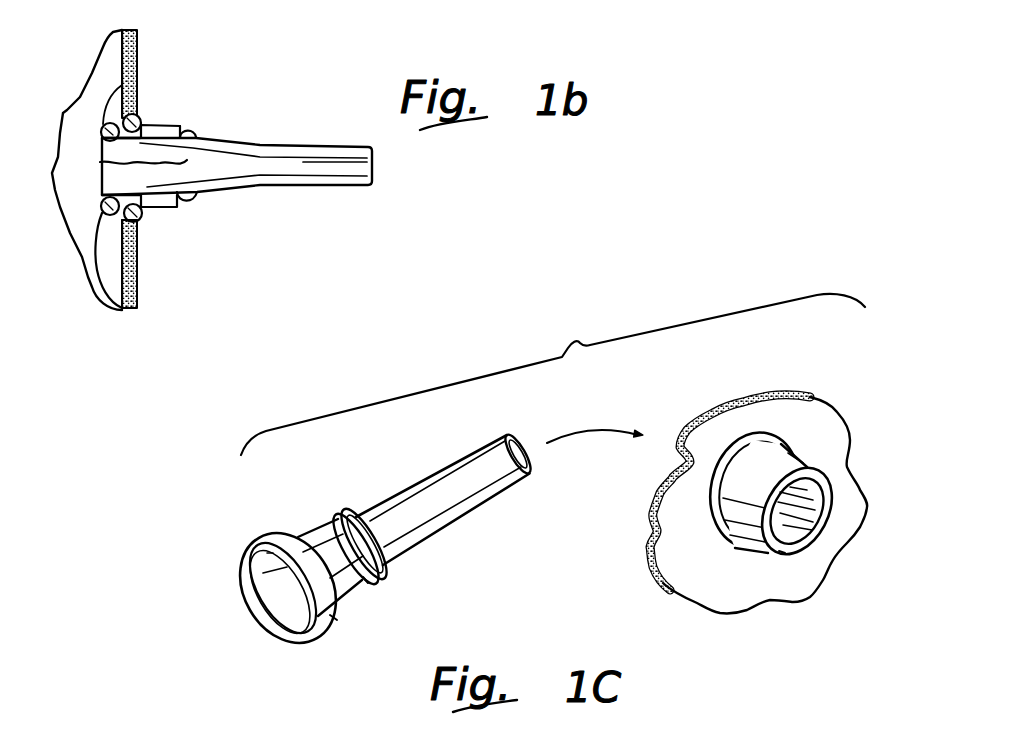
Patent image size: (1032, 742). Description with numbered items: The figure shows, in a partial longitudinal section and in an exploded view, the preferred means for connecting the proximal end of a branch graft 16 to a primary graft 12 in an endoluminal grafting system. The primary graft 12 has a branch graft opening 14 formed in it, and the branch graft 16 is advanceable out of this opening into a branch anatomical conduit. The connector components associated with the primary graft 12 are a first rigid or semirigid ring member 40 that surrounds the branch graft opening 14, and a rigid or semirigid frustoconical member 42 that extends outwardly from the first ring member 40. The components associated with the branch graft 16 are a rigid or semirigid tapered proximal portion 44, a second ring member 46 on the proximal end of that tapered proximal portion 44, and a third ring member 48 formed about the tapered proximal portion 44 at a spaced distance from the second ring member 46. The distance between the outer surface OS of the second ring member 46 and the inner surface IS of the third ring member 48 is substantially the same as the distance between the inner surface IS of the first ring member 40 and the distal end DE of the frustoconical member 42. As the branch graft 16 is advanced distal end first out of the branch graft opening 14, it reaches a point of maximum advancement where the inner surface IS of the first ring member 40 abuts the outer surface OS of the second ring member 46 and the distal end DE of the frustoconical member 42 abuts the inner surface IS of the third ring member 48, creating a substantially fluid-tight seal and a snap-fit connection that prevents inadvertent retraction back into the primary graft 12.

In FIG. 1B, the primary graft 12 is at (78, 205).
In FIG. 1C, the primary graft 12 is at (671, 568).
In FIG. 1C, the branch graft opening 14 is at (787, 512).
In FIG. 1B, the branch graft 16 is at (345, 168).
In FIG. 1C, the branch graft 16 is at (483, 495).
In FIG. 1B, the first ring member 40 is at (158, 127).
In FIG. 1C, the first ring member 40 is at (756, 434).
In FIG. 1B, the frustoconical member 42 is at (185, 123).
In FIG. 1C, the frustoconical member 42 is at (789, 460).
In FIG. 1B, the tapered proximal portion 44 is at (143, 180).
In FIG. 1C, the tapered proximal portion 44 is at (317, 537).
In FIG. 1B, the second ring member 46 is at (130, 55).
In FIG. 1C, the second ring member 46 is at (274, 540).
In FIG. 1B, the third ring member 48 is at (193, 133).
In FIG. 1C, the third ring member 48 is at (343, 517).
In FIG. 1B, the distal end DE is at (183, 129).
In FIG. 1C, the distal end DE is at (785, 553).
In FIG. 1B, the inner surface IS is at (118, 216).
In FIG. 1C, the inner surface IS is at (368, 583).
In FIG. 1B, the outer surface OS is at (142, 216).
In FIG. 1C, the outer surface OS is at (337, 620).